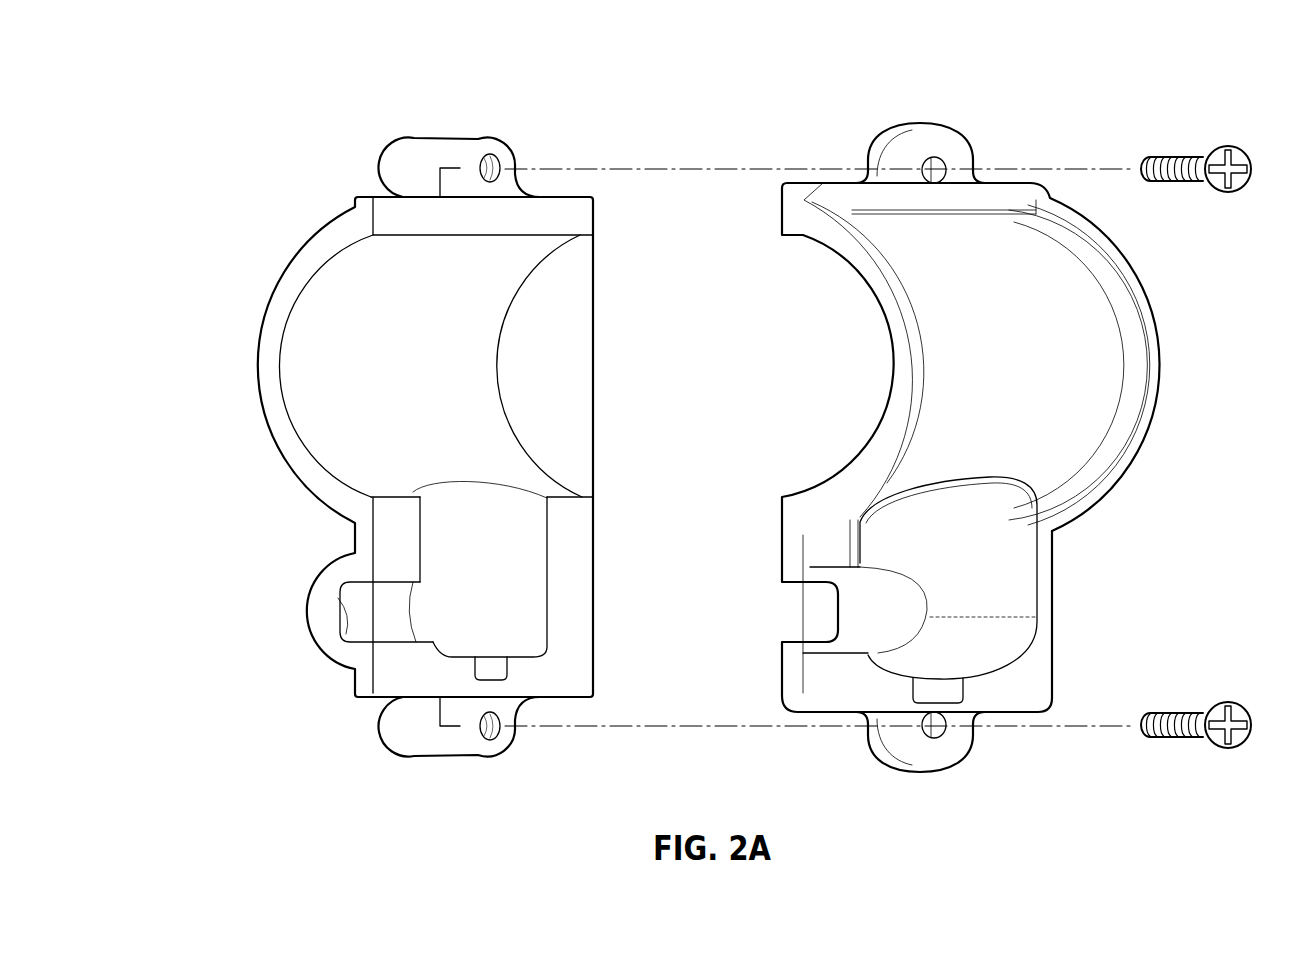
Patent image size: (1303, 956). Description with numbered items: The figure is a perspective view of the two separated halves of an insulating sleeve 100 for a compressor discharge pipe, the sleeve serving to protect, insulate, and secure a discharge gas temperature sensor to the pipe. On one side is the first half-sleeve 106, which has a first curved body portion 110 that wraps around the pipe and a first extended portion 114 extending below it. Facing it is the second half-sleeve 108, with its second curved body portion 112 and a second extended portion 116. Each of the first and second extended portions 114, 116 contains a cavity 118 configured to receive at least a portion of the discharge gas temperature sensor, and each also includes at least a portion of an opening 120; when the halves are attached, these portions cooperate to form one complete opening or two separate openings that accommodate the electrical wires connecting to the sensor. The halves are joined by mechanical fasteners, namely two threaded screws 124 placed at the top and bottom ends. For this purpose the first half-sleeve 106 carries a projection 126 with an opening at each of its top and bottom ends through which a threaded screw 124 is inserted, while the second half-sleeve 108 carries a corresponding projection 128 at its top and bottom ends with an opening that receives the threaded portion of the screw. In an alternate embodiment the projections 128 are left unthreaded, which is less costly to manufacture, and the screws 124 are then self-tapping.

The insulating sleeve 100 is at (834, 70).
The first half-sleeve 106 is at (1053, 573).
The second half-sleeve 108 is at (487, 150).
The first curved body portion 110 is at (1120, 367).
The second curved body portion 112 is at (267, 373).
The first extended portion 114 is at (1053, 647).
The second extended portion 116 is at (385, 690).
The cavity 118 is at (498, 486).
The opening 120 is at (338, 624).
The threaded screw 124 is at (1173, 155).
The projection 126 is at (877, 147).
The projection 128 is at (398, 147).